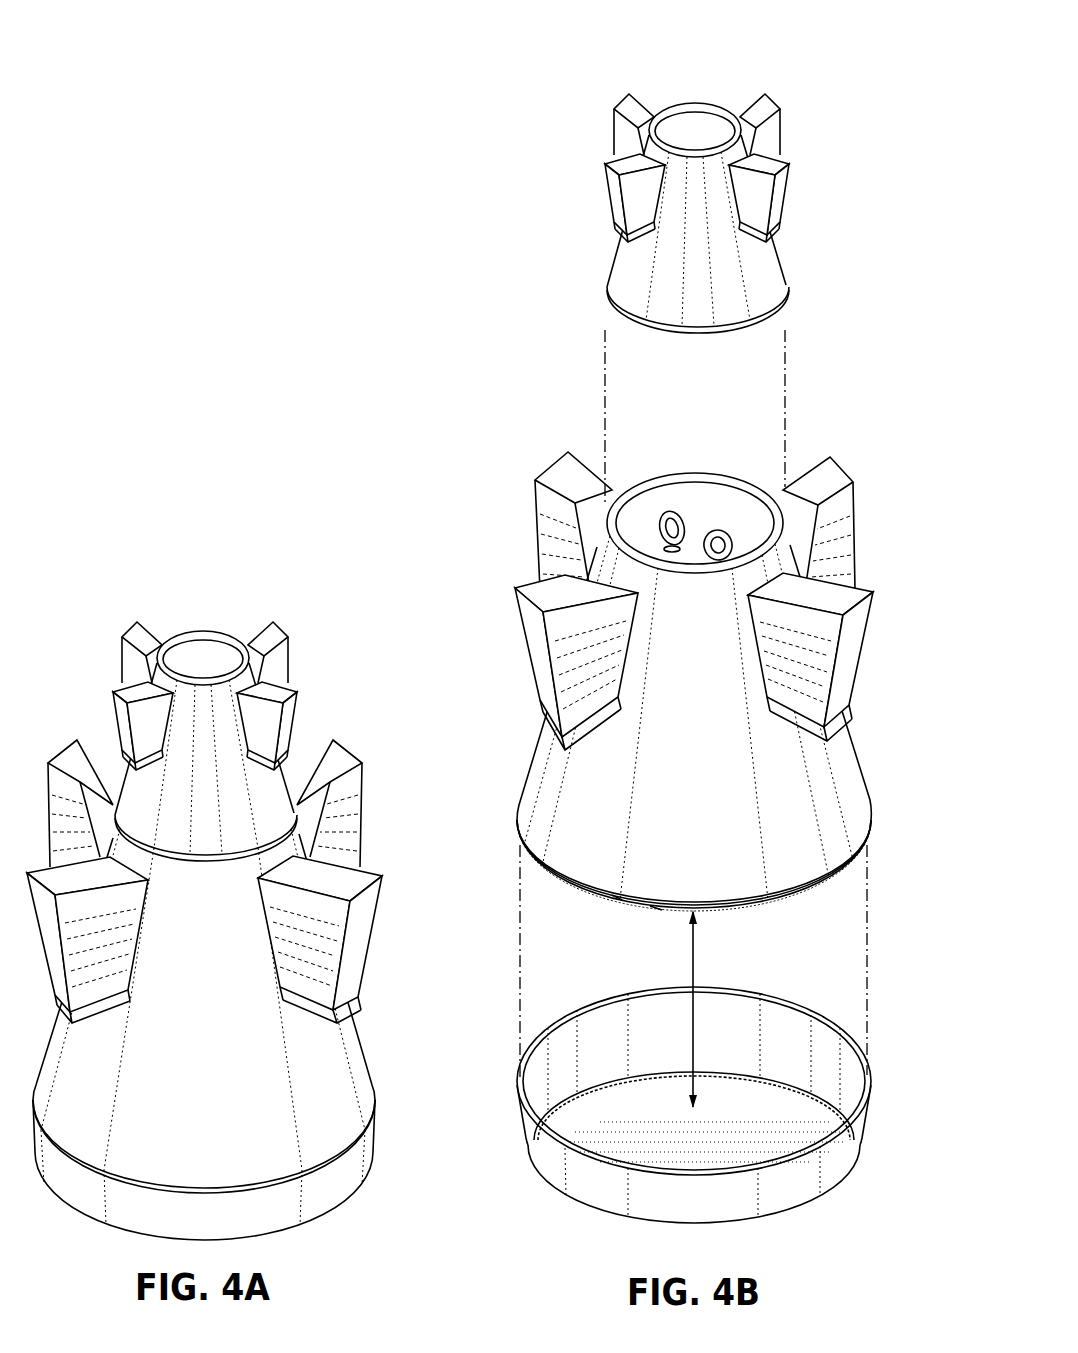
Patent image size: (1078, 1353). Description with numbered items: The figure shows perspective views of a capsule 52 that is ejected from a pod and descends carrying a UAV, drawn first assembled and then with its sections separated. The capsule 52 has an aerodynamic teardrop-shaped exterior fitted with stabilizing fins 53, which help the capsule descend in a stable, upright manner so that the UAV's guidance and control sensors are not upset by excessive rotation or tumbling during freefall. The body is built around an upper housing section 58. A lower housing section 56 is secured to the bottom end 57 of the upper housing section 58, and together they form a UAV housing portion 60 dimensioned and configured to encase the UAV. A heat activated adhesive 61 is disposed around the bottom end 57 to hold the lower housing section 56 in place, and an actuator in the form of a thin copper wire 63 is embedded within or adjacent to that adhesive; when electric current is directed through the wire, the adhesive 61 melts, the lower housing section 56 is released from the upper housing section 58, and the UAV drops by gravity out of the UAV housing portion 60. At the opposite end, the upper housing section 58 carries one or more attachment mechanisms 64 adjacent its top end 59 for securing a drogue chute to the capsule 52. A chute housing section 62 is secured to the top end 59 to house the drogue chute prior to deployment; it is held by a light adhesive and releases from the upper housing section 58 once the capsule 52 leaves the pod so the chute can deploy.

In FIG. 4A, the capsule 52 is at (176, 605).
In FIG. 4B, the capsule 52 is at (530, 444).
In FIG. 4A, the stabilizing fins 53 is at (290, 681).
In FIG. 4B, the stabilizing fins 53 is at (767, 188).
In FIG. 4A, the lower housing section 56 is at (298, 1207).
In FIG. 4B, the lower housing section 56 is at (825, 1178).
In FIG. 4A, the bottom end 57 is at (373, 1118).
In FIG. 4B, the bottom end 57 is at (866, 848).
In FIG. 4A, the upper housing section 58 is at (348, 1090).
In FIG. 4B, the upper housing section 58 is at (860, 790).
In FIG. 4A, the top end 59 is at (287, 790).
In FIG. 4B, the top end 59 is at (760, 485).
In FIG. 4B, the UAV housing portion 60 is at (828, 933).
In FIG. 4B, the heat activated adhesive 61 is at (657, 910).
In FIG. 4A, the chute housing section 62 is at (287, 772).
In FIG. 4B, the chute housing section 62 is at (763, 280).
In FIG. 4B, the thin copper wire 63 is at (618, 909).
In FIG. 4B, the attachment mechanisms 64 is at (722, 528).